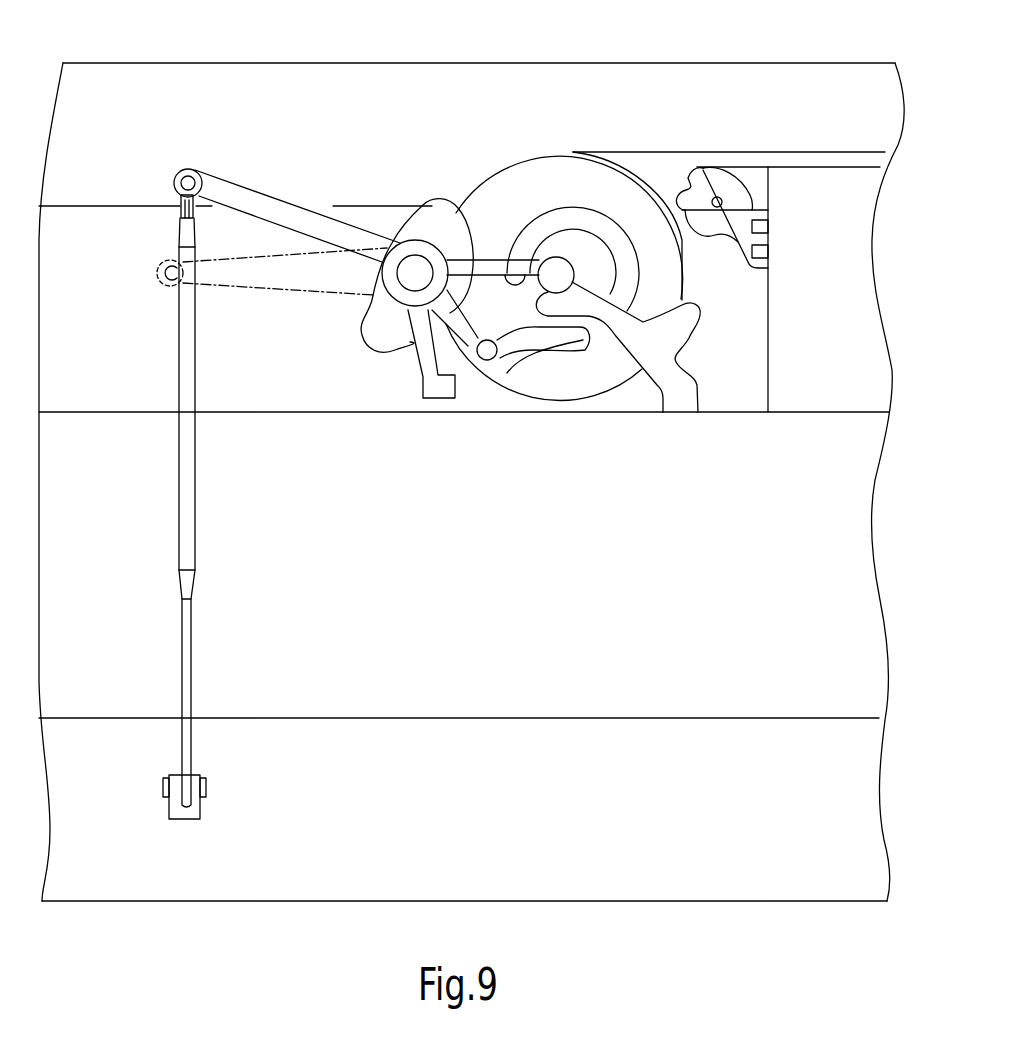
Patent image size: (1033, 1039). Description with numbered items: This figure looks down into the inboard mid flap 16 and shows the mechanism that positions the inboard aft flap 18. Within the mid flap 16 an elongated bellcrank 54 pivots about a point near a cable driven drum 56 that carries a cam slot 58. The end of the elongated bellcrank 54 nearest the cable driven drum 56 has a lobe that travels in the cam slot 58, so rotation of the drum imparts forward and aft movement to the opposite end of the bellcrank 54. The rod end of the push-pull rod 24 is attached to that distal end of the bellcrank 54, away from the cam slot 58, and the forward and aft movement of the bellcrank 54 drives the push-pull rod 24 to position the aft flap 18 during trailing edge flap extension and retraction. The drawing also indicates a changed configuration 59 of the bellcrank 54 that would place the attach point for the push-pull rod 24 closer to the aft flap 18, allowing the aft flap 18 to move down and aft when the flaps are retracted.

The mid flap 16 is at (336, 697).
The aft flap 18 is at (691, 851).
The push-pull rod 24 is at (185, 542).
The elongated bellcrank 54 is at (220, 175).
The cable driven drum 56 is at (532, 170).
The cam slot 58 is at (556, 340).
The configuration 59 is at (260, 283).